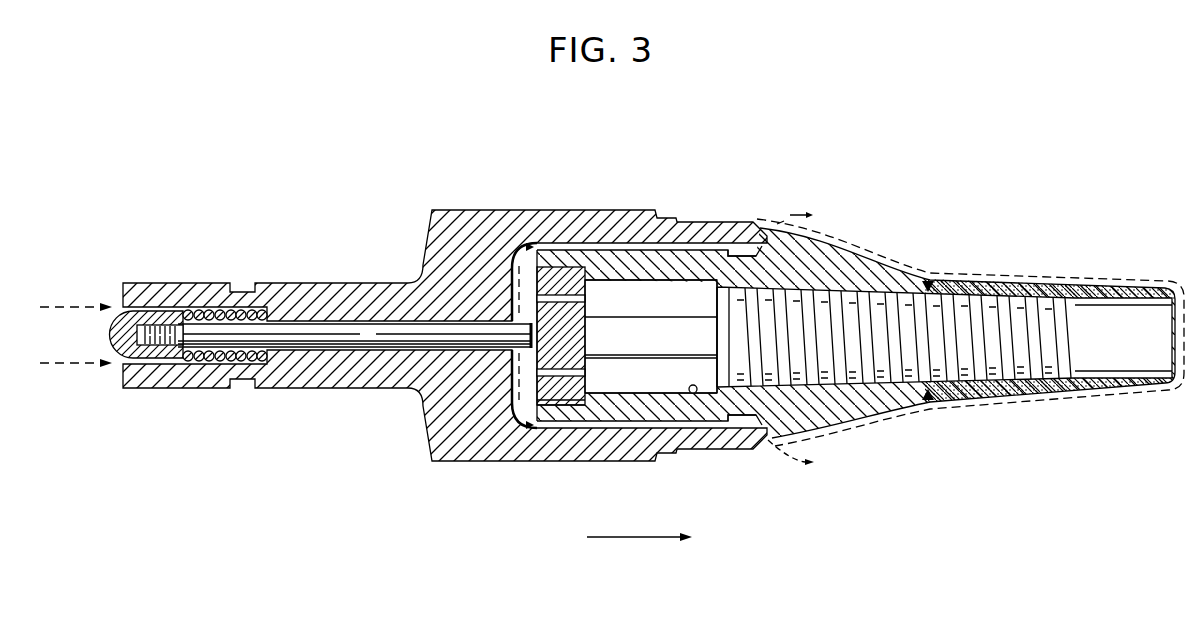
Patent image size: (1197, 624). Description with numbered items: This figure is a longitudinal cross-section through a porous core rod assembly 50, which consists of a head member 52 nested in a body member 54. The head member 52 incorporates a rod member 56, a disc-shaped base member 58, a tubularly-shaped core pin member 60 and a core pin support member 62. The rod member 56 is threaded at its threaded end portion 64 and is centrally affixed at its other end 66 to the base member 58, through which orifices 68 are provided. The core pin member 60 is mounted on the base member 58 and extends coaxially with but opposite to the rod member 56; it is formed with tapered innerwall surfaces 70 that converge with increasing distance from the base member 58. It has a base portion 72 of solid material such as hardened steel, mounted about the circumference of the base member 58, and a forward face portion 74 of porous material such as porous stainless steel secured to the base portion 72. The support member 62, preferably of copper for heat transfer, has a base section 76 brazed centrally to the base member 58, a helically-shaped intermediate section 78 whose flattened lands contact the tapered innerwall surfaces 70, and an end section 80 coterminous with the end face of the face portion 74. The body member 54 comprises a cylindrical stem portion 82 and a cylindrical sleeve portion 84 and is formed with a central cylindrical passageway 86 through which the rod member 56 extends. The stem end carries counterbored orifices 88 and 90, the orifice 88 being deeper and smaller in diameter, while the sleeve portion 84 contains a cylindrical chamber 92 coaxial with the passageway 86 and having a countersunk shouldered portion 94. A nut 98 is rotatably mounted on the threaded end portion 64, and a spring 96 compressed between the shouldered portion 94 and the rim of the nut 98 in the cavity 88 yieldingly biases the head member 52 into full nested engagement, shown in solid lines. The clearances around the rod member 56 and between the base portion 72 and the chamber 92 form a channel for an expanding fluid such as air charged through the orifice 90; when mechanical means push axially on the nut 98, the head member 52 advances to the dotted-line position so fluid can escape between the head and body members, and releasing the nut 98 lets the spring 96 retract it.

The core rod assembly 50 is at (818, 247).
The head member 52 is at (933, 270).
The body member 54 is at (575, 203).
The rod member 56 is at (358, 335).
The base member 58 is at (567, 405).
The core pin member 60 is at (650, 410).
The core pin support member 62 is at (673, 339).
The threaded end portion 64 is at (163, 328).
The other end of rod member 66 is at (533, 352).
The orifices 68 is at (587, 297).
The tapered innerwall surfaces 70 is at (693, 393).
The base portion 72 is at (868, 403).
The forward face portion 74 is at (1052, 392).
The base section 76 is at (648, 323).
The intermediate section 78 is at (1005, 320).
The end section 80 is at (1140, 327).
The stem portion 82 is at (275, 295).
The sleeve portion 84 is at (497, 215).
The cylindrical passageway 86 is at (368, 320).
The counterbored orifice 88 is at (238, 362).
The counterbored orifice 90 is at (153, 364).
The cylindrical chamber 92 is at (628, 247).
The countersunk shouldered portion 94 is at (763, 226).
The spring 96 is at (220, 310).
The nut 98 is at (110, 328).